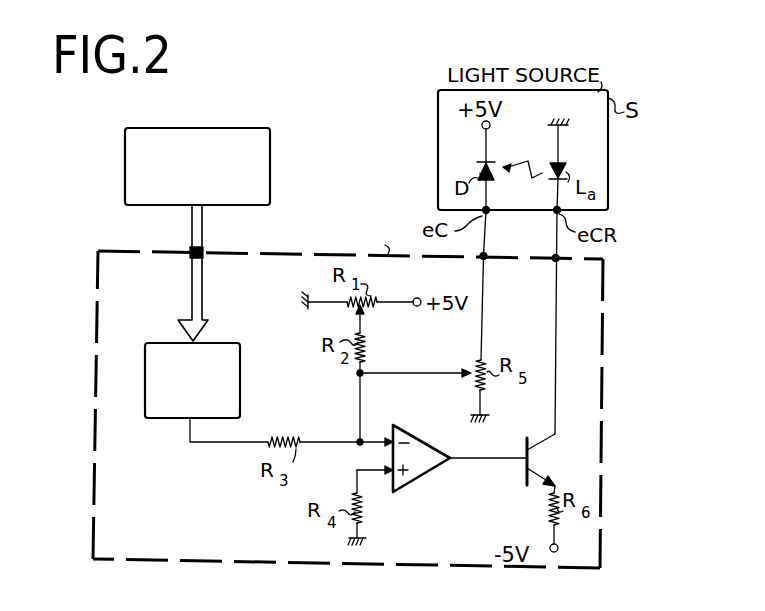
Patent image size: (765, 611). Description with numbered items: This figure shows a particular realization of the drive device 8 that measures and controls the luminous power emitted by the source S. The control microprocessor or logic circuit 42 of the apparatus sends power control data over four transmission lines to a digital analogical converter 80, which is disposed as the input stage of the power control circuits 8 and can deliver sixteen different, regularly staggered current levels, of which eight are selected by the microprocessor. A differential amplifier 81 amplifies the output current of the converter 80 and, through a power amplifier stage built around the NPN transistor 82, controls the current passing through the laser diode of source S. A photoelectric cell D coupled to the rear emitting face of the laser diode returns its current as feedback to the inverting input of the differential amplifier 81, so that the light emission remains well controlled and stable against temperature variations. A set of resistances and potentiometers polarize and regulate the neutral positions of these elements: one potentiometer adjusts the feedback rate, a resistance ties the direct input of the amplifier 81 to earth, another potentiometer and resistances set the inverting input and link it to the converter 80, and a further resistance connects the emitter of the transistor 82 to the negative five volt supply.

The drive device 8 is at (90, 296).
The logic circuit 42 is at (271, 162).
The digital analogical converter 80 is at (241, 386).
The differential amplifier 81 is at (413, 481).
The transistor 82 is at (525, 472).